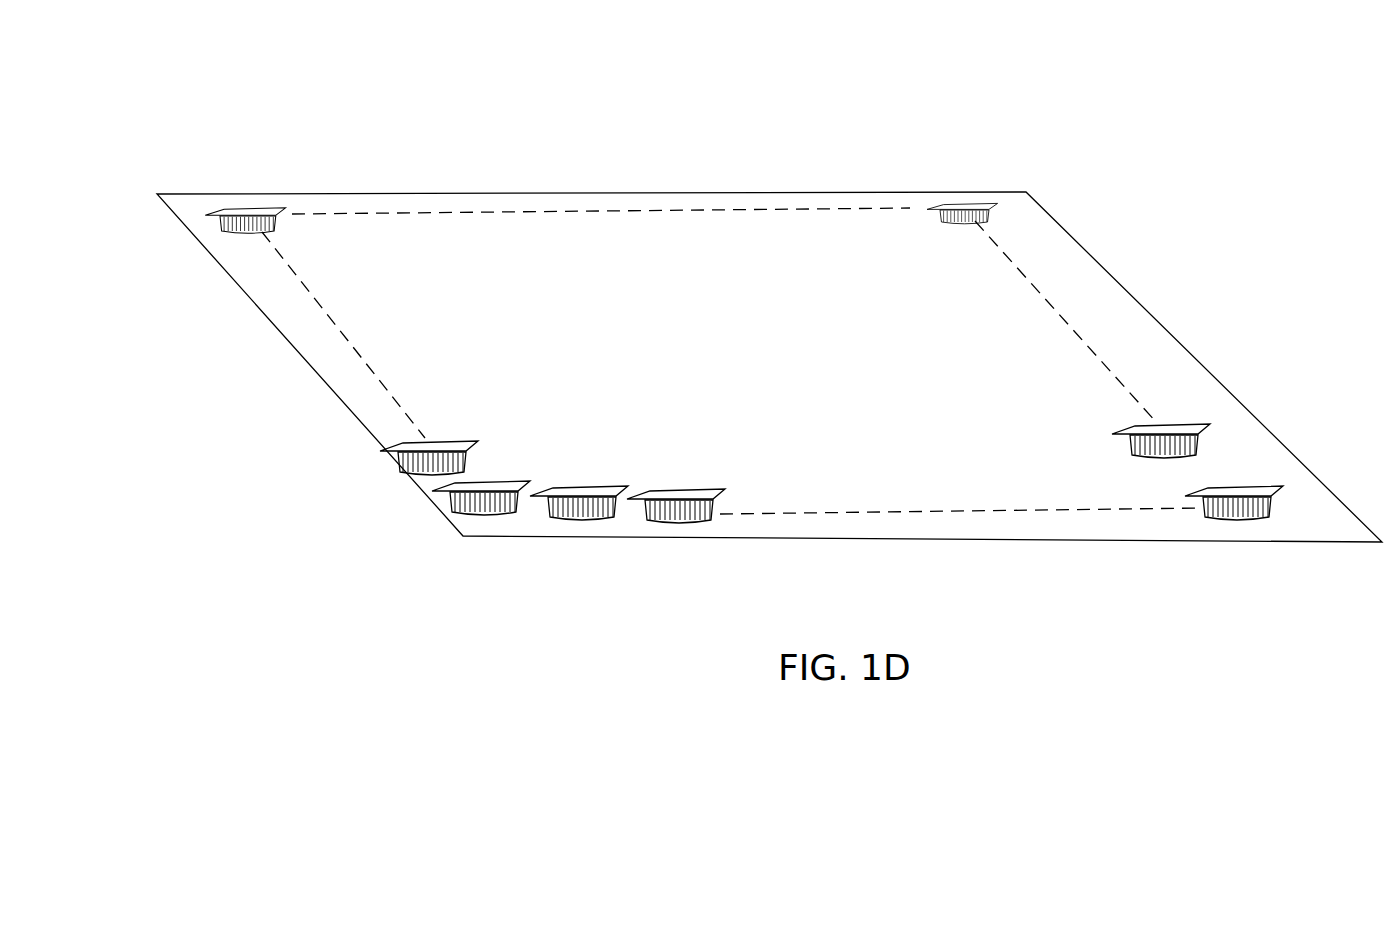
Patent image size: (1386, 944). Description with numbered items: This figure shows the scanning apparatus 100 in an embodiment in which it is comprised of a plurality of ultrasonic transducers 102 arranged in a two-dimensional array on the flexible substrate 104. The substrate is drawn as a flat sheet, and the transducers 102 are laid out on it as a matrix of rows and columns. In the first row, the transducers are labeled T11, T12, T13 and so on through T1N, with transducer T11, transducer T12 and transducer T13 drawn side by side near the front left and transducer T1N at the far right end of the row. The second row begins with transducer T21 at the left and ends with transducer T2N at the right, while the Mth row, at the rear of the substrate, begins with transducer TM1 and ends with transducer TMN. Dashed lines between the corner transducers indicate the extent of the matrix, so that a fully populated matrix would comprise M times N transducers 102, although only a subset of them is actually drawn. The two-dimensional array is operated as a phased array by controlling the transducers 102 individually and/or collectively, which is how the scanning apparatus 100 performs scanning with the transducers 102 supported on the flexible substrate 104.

The scanning apparatus 100 is at (346, 109).
The ultrasonic transducer 102 is at (461, 530).
The flexible substrate 104 is at (621, 193).
The transducer TM1 is at (196, 222).
The transducer TMN is at (1029, 211).
The transducer T21 is at (398, 458).
The transducer T11 is at (461, 513).
The transducer T12 is at (579, 533).
The transducer T13 is at (676, 535).
The transducer T2N is at (1237, 440).
The transducer T1N is at (1234, 534).